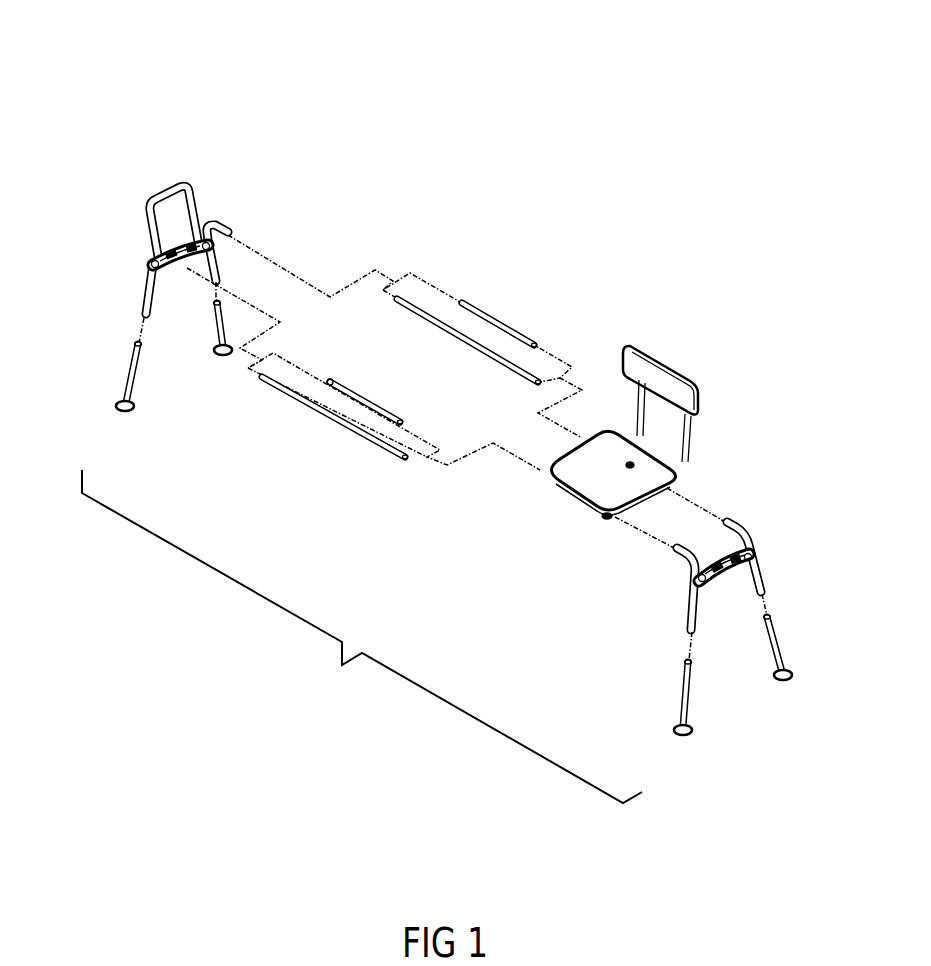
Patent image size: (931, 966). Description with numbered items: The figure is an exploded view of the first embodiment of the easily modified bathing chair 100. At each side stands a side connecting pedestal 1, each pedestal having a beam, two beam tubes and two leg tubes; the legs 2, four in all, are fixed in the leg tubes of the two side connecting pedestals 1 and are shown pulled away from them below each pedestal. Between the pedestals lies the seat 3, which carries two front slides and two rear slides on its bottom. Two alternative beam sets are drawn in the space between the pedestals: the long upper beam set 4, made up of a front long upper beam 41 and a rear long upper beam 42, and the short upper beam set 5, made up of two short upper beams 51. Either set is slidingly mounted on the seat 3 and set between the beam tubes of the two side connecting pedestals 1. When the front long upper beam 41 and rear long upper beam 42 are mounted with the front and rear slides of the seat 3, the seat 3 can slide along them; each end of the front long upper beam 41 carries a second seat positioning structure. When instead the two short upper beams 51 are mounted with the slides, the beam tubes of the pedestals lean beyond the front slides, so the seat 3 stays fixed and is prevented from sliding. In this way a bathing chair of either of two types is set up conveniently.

The easily modified bathing chair 100 is at (218, 33).
The side connecting pedestal 1 is at (167, 185).
The leg 2 is at (136, 379).
The seat 3 is at (673, 358).
The long upper beam set 4 is at (263, 497).
The front long upper beam 41 is at (367, 443).
The rear long upper beam 42 is at (458, 306).
The short upper beam set 5 is at (527, 218).
The short upper beam 51 is at (483, 310).